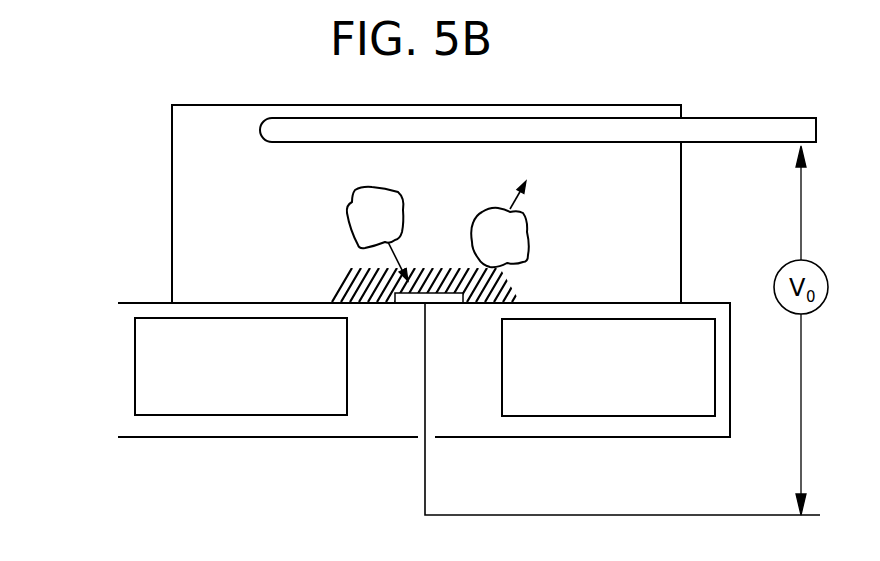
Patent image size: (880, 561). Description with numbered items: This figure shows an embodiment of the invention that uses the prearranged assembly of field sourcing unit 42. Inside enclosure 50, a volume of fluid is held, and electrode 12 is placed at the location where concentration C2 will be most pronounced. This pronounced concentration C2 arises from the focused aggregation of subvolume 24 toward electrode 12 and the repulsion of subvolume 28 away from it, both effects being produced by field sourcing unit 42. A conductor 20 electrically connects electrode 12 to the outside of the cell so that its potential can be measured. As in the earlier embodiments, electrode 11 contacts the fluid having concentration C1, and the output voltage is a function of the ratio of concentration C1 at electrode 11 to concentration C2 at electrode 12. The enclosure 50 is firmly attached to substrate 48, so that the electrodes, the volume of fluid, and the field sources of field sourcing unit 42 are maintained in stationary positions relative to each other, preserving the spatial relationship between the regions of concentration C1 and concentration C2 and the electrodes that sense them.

The electrode 11 is at (703, 123).
The electrode 12 is at (412, 300).
The conductor 20 is at (425, 496).
The subvolume 24 is at (350, 195).
The subvolume 28 is at (527, 222).
The field sourcing unit 42 is at (268, 395).
The substrate 48 is at (163, 428).
The enclosure 50 is at (172, 248).
The concentration C1 is at (217, 131).
The concentration C2 is at (348, 284).